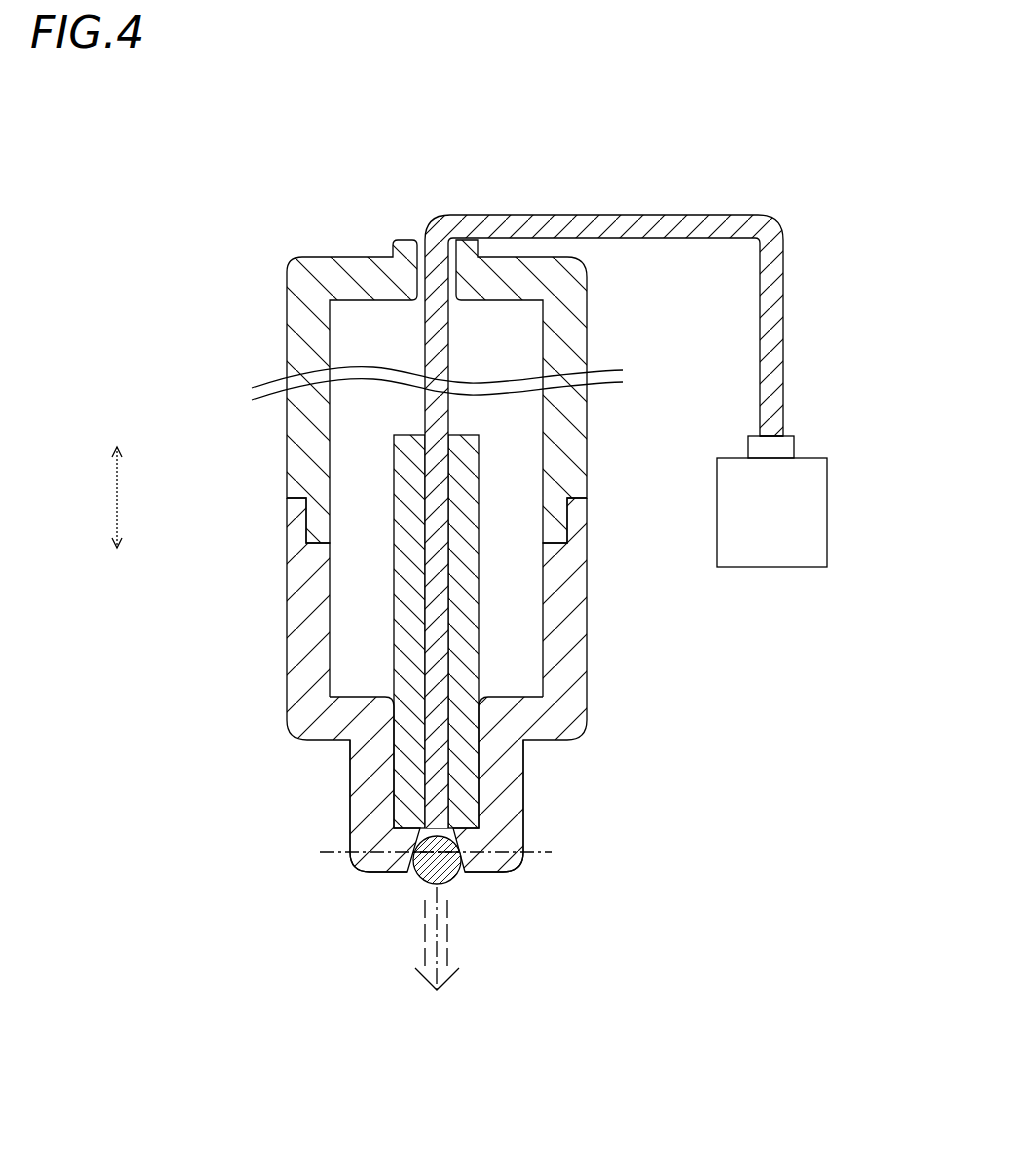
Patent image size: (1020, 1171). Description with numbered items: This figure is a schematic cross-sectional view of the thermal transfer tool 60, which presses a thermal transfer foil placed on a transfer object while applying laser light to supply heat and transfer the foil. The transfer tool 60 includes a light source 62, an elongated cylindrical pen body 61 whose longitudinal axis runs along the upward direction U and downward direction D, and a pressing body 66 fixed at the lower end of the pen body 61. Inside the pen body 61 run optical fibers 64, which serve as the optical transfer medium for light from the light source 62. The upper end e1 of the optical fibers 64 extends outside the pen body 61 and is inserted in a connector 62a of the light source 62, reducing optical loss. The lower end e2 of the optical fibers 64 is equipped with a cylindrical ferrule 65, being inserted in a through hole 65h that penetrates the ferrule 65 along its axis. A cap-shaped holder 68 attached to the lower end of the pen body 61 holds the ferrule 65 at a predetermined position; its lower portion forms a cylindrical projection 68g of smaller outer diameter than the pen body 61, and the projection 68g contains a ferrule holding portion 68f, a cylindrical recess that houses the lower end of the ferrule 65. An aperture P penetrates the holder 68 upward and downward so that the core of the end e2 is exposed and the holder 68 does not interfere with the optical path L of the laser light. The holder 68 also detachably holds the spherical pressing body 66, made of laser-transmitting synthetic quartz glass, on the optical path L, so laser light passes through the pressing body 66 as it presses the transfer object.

The thermal transfer tool 60 is at (818, 167).
The pen body 61 is at (294, 254).
The light source 62 is at (770, 567).
The connector 62a is at (794, 446).
The optical fibers 64 is at (628, 215).
The ferrule 65 is at (392, 467).
The through hole 65h is at (428, 500).
The pressing body 66 is at (423, 887).
The holder 68 is at (275, 607).
The ferrule holding portion 68f is at (398, 698).
The cylindrical projection 68g is at (575, 795).
The upper end of the optical fibers e1 is at (760, 436).
The lower end of the optical fibers e2 is at (374, 859).
The aperture P is at (445, 859).
The optical path L is at (448, 932).
The upward direction U is at (119, 481).
The downward direction D is at (117, 562).